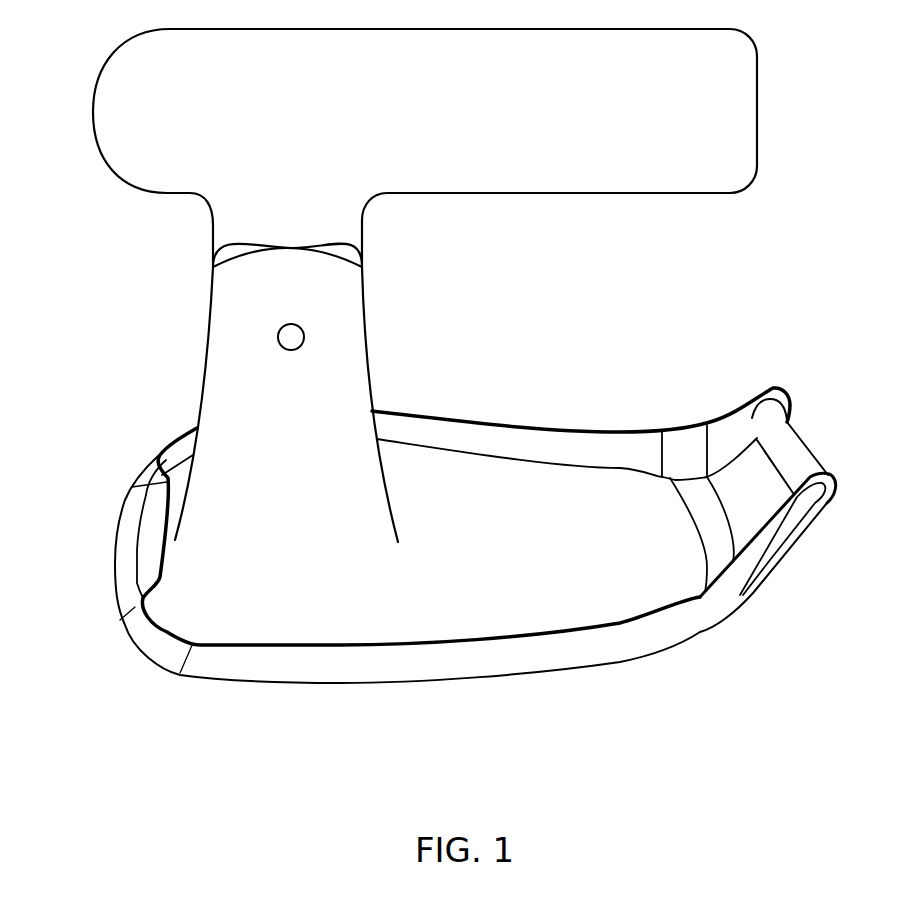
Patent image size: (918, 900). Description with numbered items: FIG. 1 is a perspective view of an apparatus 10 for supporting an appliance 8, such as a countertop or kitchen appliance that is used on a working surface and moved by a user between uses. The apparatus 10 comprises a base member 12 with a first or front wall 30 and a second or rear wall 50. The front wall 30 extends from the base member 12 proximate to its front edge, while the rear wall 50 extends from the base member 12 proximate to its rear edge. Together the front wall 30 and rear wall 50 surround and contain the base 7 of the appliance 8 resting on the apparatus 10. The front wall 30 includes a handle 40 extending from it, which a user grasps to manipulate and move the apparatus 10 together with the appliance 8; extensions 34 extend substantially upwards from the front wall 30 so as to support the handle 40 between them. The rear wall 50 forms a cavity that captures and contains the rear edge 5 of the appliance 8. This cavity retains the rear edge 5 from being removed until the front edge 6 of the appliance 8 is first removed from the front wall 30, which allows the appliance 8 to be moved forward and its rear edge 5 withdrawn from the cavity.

The apparatus 10 is at (461, 399).
The appliance 8 is at (757, 110).
The base 7 is at (475, 510).
The front wall 30 is at (655, 455).
The handle 40 is at (789, 531).
The extensions 34 is at (767, 563).
The front edge 6 is at (692, 565).
The base member 12 is at (410, 683).
The rear edge 5 is at (138, 533).
The rear wall 50 is at (127, 556).